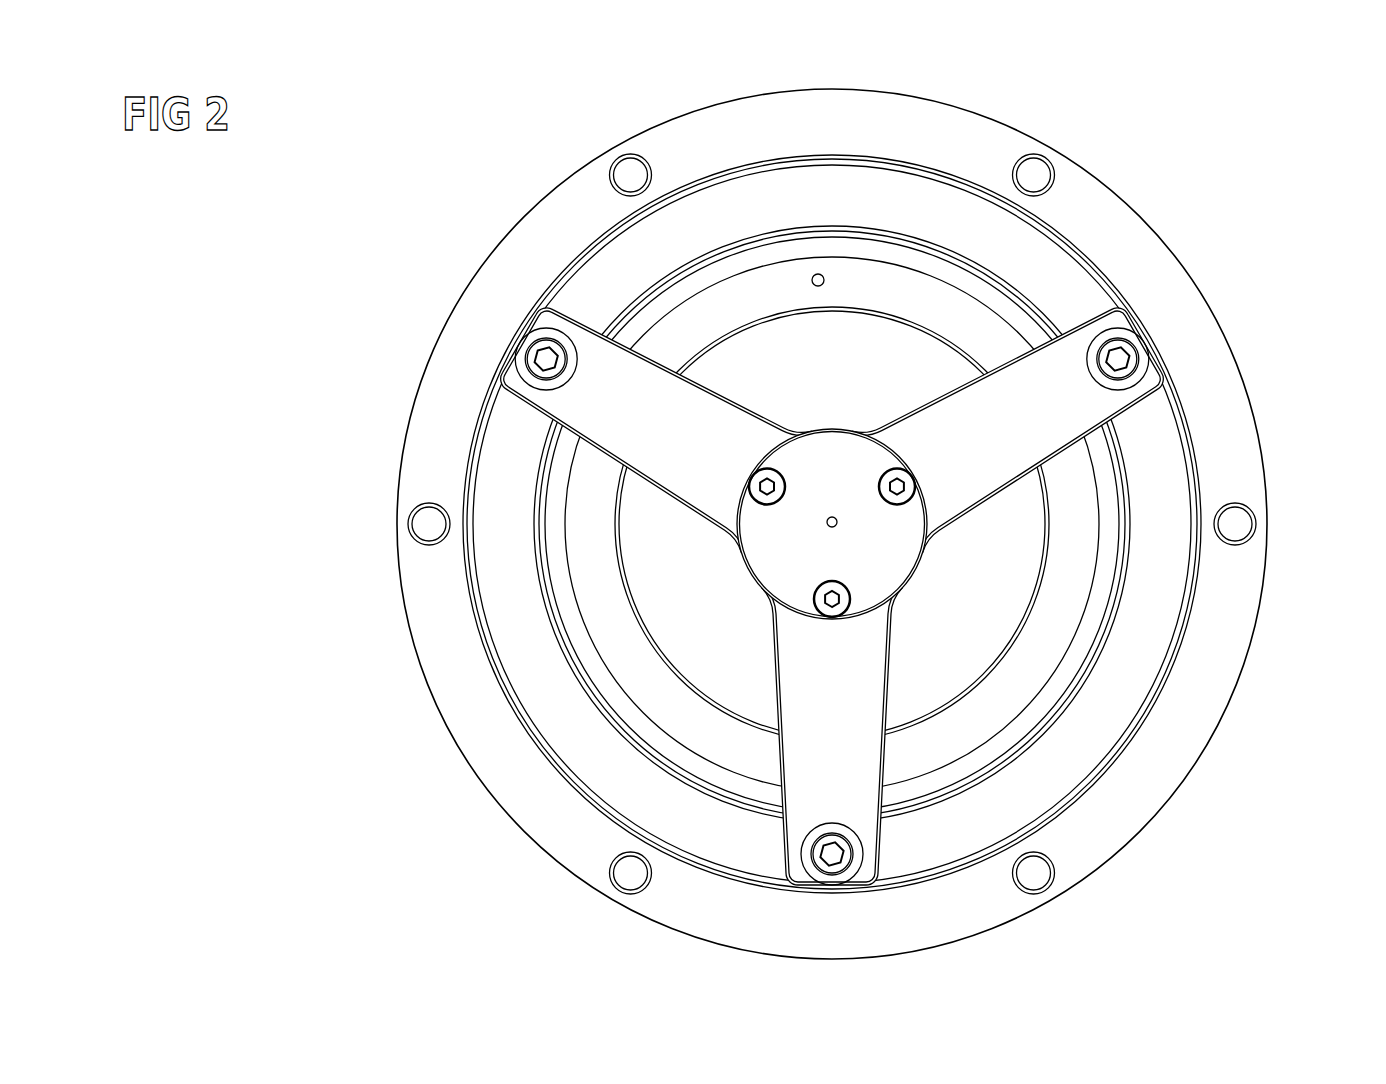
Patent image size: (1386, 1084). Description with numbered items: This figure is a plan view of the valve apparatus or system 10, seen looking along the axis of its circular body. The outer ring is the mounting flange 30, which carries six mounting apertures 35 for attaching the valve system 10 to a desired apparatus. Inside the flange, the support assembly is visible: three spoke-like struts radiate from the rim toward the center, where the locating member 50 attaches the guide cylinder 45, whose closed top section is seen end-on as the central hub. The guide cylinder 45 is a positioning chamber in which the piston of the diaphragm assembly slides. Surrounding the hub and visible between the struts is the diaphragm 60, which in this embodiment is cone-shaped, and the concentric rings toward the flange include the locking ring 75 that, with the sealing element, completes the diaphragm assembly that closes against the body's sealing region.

The valve apparatus 10 is at (1190, 165).
The mounting flange 30 is at (1203, 375).
The mounting apertures 35 is at (422, 523).
The guide cylinder 45 is at (845, 551).
The locating member 50 is at (696, 443).
The diaphragm 60 is at (722, 648).
The locking ring 75 is at (898, 200).